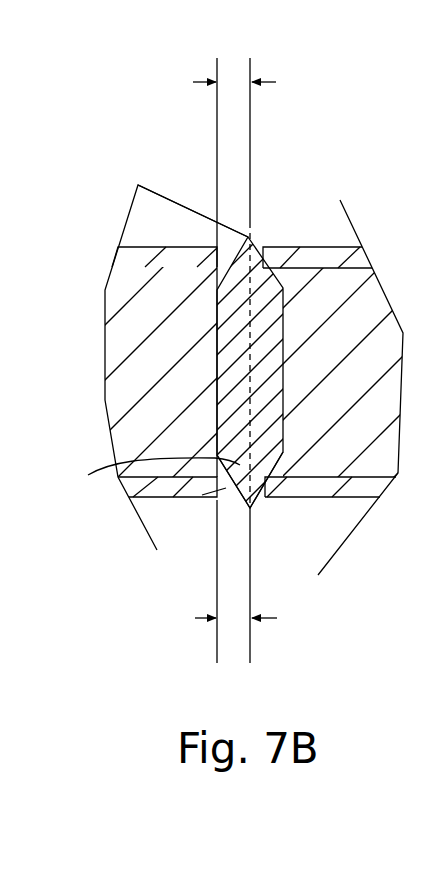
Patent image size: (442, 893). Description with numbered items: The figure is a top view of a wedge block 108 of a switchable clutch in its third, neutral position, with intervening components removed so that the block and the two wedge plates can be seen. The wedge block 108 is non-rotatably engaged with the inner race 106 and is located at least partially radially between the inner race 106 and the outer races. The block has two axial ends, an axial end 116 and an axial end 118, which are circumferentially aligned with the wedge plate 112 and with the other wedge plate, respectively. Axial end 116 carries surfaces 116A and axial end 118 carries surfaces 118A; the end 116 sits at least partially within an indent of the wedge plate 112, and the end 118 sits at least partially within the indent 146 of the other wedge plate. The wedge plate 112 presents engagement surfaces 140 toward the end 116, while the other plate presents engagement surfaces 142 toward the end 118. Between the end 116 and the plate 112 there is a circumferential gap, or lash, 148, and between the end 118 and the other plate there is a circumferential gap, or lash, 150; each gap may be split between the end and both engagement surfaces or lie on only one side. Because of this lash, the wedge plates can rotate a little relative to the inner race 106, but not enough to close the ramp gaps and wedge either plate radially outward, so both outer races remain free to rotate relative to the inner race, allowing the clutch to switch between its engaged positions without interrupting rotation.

The inner race 106 is at (105, 402).
The wedge block 108 is at (212, 377).
The wedge plate 112 is at (118, 258).
The axial end 116 is at (246, 232).
The surfaces 116A is at (138, 185).
The axial end 118 is at (254, 513).
The surfaces 118A is at (230, 505).
The engagement surfaces 140 is at (193, 250).
The engagement surfaces 142 is at (212, 490).
The indent 146 is at (212, 498).
The circumferential gap (lash) 148 is at (193, 82).
The circumferential gap (lash) 150 is at (195, 618).